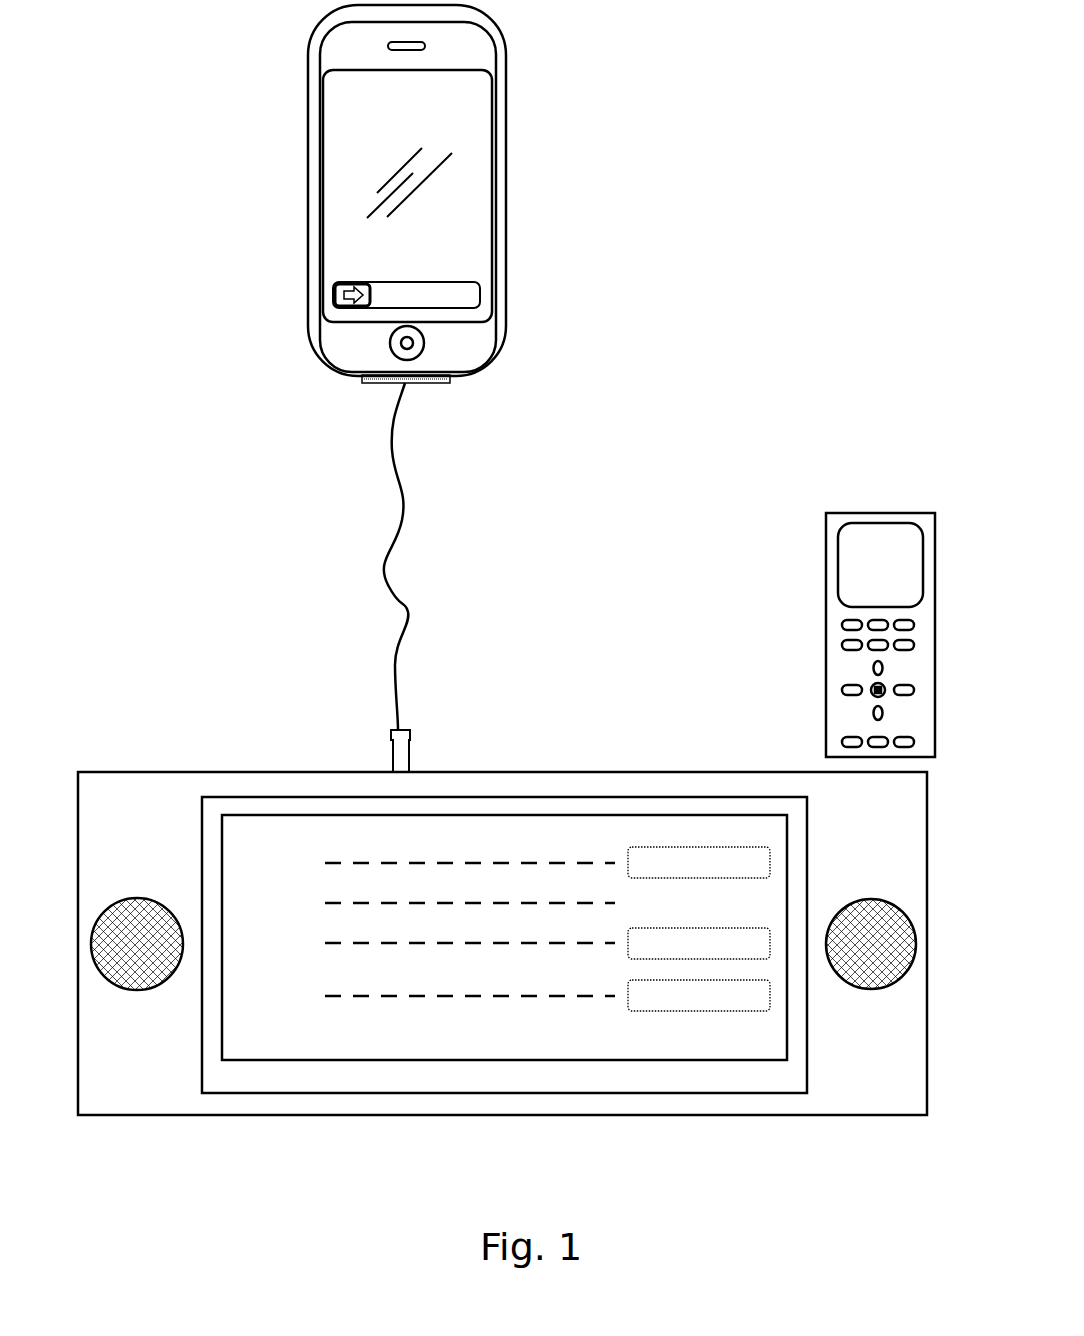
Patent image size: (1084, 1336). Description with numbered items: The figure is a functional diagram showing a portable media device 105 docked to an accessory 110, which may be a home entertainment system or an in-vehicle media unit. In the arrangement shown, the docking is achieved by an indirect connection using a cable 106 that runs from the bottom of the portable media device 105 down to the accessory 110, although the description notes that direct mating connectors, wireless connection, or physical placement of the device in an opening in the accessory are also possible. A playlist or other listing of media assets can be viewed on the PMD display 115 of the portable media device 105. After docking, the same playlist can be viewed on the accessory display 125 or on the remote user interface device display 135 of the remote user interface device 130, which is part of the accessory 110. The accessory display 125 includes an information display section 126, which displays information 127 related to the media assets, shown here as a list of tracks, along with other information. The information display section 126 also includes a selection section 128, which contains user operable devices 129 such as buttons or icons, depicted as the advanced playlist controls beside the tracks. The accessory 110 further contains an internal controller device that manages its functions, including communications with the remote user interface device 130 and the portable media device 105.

The portable media device 105 is at (503, 273).
The cable 106 is at (404, 598).
The accessory 110 is at (632, 772).
The PMD display 115 is at (360, 112).
The accessory display 125 is at (545, 1093).
The information display section 126 is at (340, 832).
The information 127 is at (293, 1013).
The selection section 128 is at (715, 832).
The user operable devices 129 is at (690, 1010).
The remote user interface device 130 is at (878, 513).
The remote user interface device display 135 is at (864, 577).